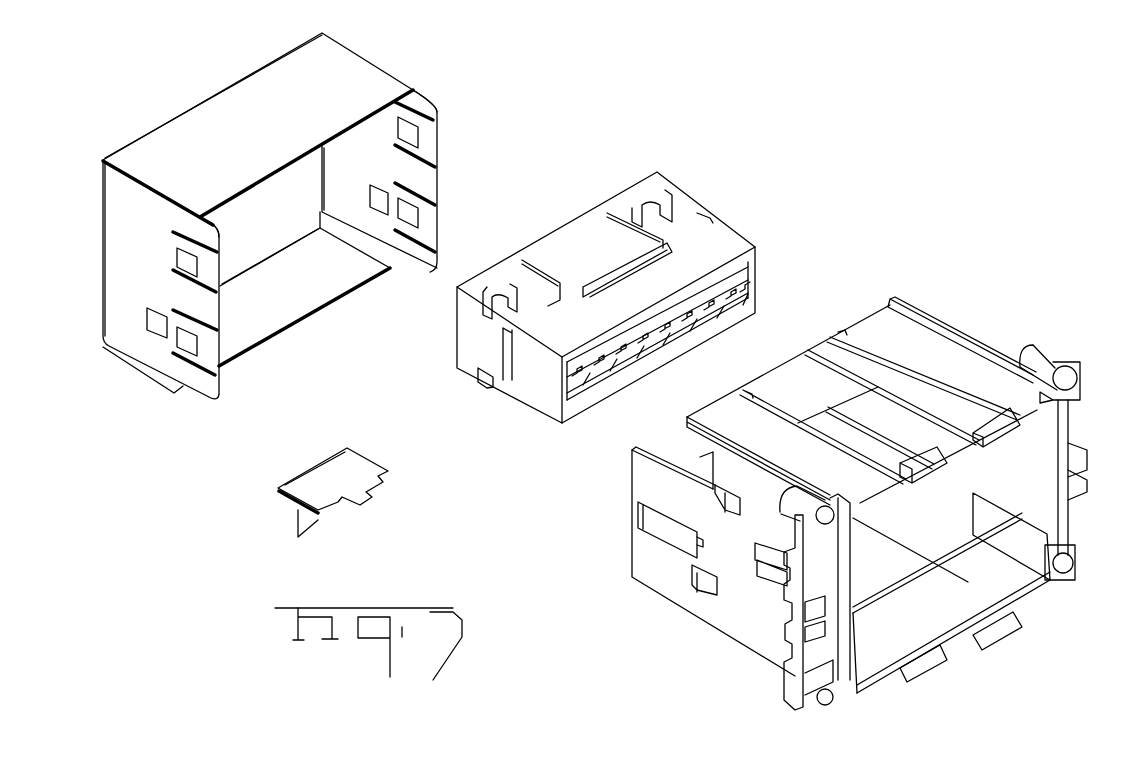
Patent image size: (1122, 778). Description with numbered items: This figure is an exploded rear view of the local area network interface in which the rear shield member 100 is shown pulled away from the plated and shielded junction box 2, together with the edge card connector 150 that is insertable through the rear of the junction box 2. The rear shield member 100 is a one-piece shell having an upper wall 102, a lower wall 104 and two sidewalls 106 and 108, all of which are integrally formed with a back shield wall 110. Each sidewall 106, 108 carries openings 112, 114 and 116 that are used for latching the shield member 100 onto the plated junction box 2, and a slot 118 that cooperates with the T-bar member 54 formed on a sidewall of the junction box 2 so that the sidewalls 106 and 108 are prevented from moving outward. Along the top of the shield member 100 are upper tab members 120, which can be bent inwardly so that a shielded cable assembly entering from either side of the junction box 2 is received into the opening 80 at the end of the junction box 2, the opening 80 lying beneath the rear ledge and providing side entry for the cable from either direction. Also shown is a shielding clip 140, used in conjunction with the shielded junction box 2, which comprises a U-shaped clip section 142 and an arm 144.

The plated and shielded junction box 2 is at (814, 445).
The T-bar member 54 is at (655, 523).
The opening 80 is at (702, 455).
The rear shield member 100 is at (368, 77).
The upper wall 102 is at (297, 118).
The lower wall 104 is at (255, 306).
The sidewall 106 is at (112, 244).
The sidewall 108 is at (337, 162).
The back shield wall 110 is at (243, 225).
The opening 112 is at (187, 248).
The opening 114 is at (220, 368).
The opening 116 is at (148, 330).
The slot 118 is at (197, 320).
The upper tab member 120 is at (211, 228).
The shielding clip 140 is at (308, 478).
The U-shaped clip section 142 is at (307, 482).
The arm 144 is at (307, 528).
The edge card connector 150 is at (735, 221).